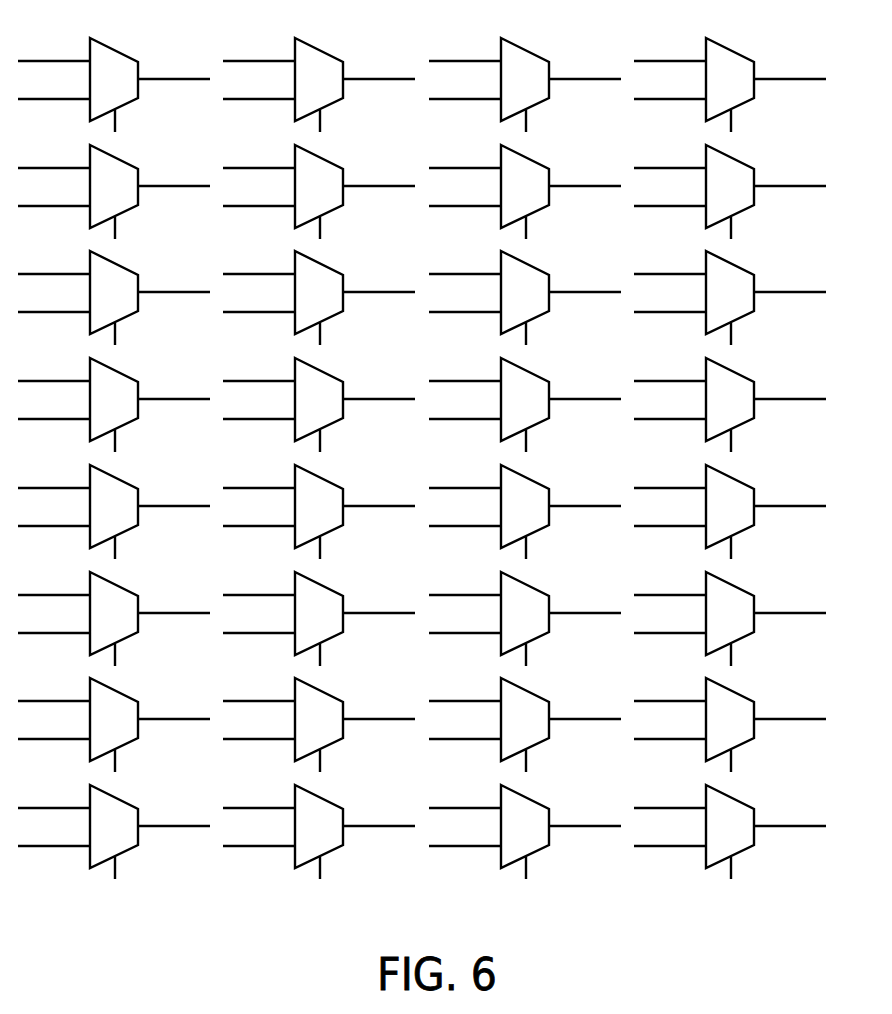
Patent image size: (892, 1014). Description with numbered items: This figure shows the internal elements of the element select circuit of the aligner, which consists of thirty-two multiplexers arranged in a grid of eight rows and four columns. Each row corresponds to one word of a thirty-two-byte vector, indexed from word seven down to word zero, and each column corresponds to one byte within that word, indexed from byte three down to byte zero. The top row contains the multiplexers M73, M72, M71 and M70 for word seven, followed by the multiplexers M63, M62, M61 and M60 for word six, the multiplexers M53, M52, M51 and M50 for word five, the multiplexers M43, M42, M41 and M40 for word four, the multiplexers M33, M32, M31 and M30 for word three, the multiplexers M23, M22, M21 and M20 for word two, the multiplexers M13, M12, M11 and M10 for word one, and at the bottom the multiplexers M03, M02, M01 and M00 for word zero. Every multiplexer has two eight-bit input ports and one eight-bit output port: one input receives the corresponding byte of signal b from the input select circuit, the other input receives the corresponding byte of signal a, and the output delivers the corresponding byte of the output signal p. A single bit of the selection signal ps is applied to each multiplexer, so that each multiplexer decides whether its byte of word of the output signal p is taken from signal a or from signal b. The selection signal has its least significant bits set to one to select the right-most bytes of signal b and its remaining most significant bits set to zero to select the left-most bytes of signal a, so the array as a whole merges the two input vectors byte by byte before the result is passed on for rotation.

The multiplexer M73 is at (43, 53).
The multiplexer M72 is at (319, 86).
The multiplexer M71 is at (525, 86).
The multiplexer M70 is at (730, 86).
The multiplexer M63 is at (114, 193).
The multiplexer M62 is at (319, 193).
The multiplexer M61 is at (525, 193).
The multiplexer M60 is at (730, 193).
The multiplexer M53 is at (114, 299).
The multiplexer M52 is at (319, 299).
The multiplexer M51 is at (525, 299).
The multiplexer M50 is at (730, 299).
The multiplexer M43 is at (114, 406).
The multiplexer M42 is at (319, 406).
The multiplexer M41 is at (525, 406).
The multiplexer M40 is at (730, 406).
The multiplexer M33 is at (114, 513).
The multiplexer M32 is at (319, 513).
The multiplexer M31 is at (525, 513).
The multiplexer M30 is at (730, 513).
The multiplexer M23 is at (114, 620).
The multiplexer M22 is at (319, 620).
The multiplexer M21 is at (525, 620).
The multiplexer M20 is at (730, 620).
The multiplexer M13 is at (114, 726).
The multiplexer M12 is at (319, 726).
The multiplexer M11 is at (525, 726).
The multiplexer M10 is at (730, 726).
The multiplexer M03 is at (114, 833).
The multiplexer M02 is at (319, 833).
The multiplexer M01 is at (525, 833).
The multiplexer M00 is at (730, 833).